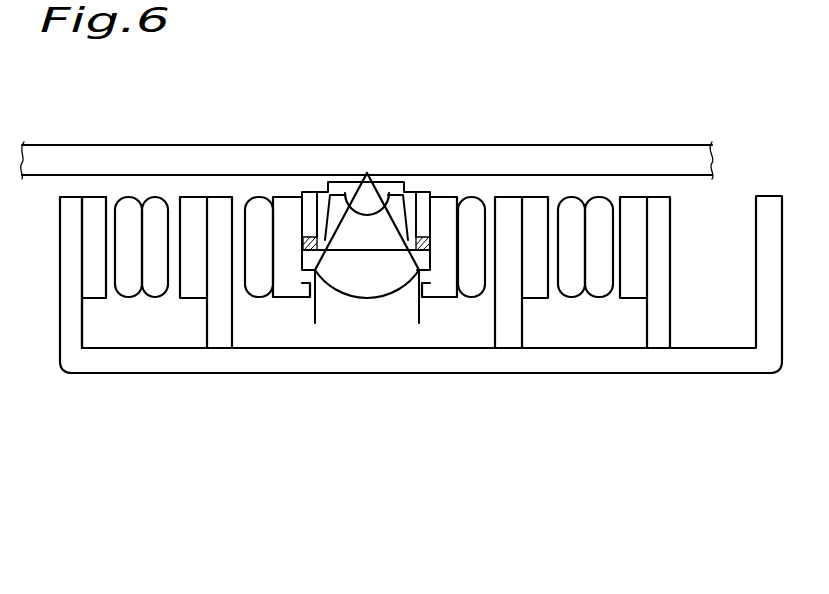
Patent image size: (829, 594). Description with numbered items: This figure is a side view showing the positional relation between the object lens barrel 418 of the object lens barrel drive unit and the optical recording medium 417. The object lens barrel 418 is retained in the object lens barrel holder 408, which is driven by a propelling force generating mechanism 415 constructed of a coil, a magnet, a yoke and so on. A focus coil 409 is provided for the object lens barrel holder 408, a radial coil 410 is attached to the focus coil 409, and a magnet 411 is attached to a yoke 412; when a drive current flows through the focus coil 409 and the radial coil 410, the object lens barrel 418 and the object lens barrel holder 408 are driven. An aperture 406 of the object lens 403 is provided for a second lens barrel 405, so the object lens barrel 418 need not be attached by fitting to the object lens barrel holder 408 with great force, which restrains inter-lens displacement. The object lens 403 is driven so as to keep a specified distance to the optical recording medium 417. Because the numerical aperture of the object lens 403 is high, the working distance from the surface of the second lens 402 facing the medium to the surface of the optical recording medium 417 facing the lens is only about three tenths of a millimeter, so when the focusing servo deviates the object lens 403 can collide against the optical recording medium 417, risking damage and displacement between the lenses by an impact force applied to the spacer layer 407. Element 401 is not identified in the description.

The conical pivot body 401 is at (364, 275).
The second lens 402 is at (372, 205).
The object lens 403 is at (567, 480).
The second lens barrel 405 is at (311, 203).
The aperture 406 is at (333, 225).
The spacer layer 407 is at (300, 238).
The object lens barrel holder 408 is at (285, 288).
The focus coil 409 is at (155, 290).
The radial coil 410 is at (127, 290).
The magnet 411 is at (190, 290).
The yoke 412 is at (222, 340).
The propelling force generating mechanism 415 is at (227, 500).
The optical recording medium 417 is at (533, 153).
The object lens barrel 418 is at (492, 401).